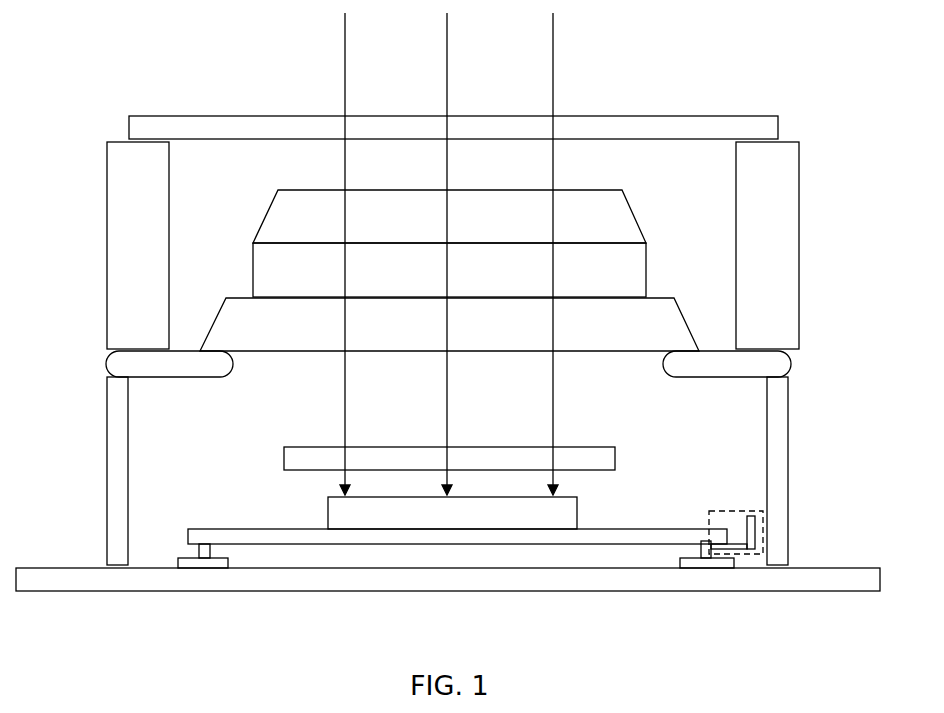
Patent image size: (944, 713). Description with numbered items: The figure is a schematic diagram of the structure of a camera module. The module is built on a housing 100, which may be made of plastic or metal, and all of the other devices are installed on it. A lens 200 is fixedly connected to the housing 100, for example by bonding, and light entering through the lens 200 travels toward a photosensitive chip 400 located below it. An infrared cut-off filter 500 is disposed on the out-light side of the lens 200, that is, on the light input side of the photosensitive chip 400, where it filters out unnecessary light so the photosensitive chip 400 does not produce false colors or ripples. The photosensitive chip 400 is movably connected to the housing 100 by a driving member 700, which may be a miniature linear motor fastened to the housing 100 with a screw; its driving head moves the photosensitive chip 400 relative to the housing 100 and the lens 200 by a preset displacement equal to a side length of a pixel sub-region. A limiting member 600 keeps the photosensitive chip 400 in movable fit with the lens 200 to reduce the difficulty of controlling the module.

The housing 100 is at (757, 218).
The lens 200 is at (314, 222).
The photosensitive chip 400 is at (472, 512).
The infrared cut-off filter 500 is at (577, 462).
The limiting member 600 is at (705, 553).
The driving member 700 is at (735, 518).